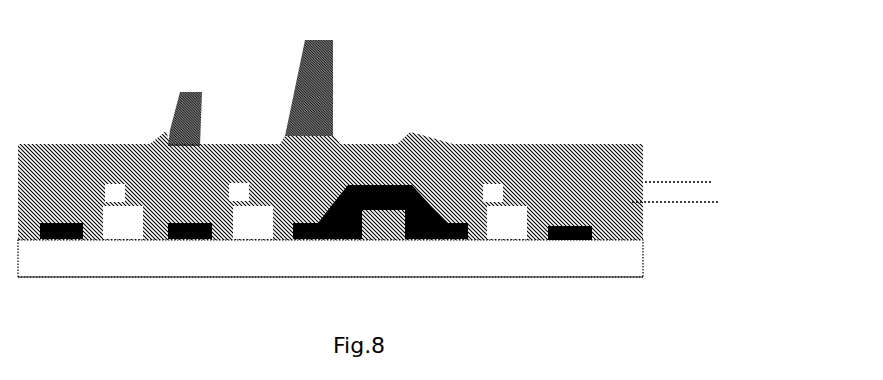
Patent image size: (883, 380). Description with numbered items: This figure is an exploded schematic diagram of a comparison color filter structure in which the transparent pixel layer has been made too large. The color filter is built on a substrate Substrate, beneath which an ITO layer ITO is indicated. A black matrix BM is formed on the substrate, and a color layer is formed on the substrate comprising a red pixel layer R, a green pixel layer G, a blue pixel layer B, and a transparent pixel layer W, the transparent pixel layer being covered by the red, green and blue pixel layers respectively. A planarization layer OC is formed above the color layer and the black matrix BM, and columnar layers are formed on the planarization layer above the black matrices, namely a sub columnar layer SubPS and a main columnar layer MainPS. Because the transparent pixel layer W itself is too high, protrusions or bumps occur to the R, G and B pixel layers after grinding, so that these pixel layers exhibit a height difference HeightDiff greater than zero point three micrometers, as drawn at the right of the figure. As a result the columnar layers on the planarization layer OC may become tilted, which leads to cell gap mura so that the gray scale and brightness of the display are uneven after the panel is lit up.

The planarization layer OC is at (330, 185).
The sub columnar layer SubPS is at (171, 106).
The main columnar layer MainPS is at (343, 88).
The black matrix BM is at (316, 212).
The transparent pixel layer W is at (315, 222).
The red pixel layer R is at (304, 193).
The green pixel layer G is at (239, 192).
The blue pixel layer B is at (360, 193).
The substrate Substrate is at (330, 258).
The ITO layer ITO is at (330, 287).
The height difference HeightDiff is at (659, 180).